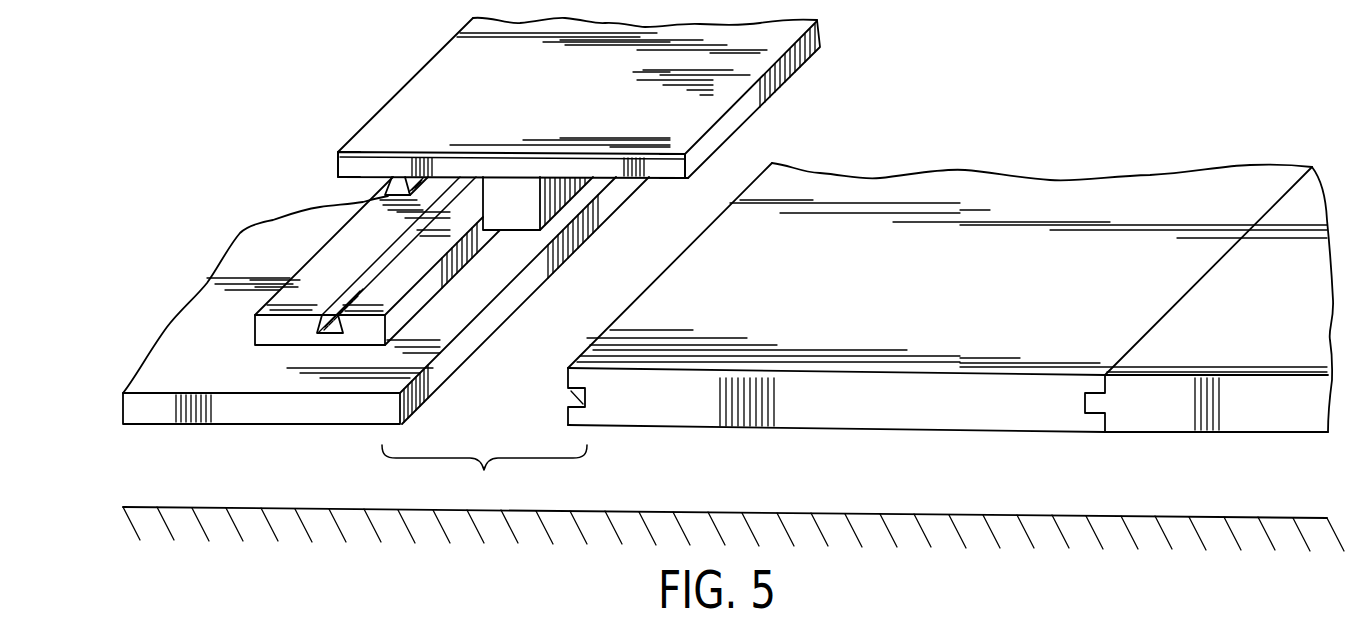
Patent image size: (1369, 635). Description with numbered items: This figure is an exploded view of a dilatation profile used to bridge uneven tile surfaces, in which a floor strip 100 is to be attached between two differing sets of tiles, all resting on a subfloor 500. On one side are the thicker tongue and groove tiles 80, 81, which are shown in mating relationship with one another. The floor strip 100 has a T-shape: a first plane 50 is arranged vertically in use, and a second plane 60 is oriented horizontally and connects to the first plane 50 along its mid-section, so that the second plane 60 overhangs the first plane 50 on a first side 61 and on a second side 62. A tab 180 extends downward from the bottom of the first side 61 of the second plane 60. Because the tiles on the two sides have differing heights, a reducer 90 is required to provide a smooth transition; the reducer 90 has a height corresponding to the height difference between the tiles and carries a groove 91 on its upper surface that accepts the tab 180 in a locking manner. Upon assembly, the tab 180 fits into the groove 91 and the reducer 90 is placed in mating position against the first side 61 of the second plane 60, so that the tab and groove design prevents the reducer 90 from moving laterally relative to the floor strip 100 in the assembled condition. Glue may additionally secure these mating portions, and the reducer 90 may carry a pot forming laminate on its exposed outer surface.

The floor strip 100 is at (212, 103).
The second plane 60 is at (605, 81).
The first side 61 is at (342, 164).
The second side 62 is at (661, 172).
The tab 180 is at (397, 183).
The first plane 50 is at (524, 212).
The tongue and groove tile 80 is at (204, 379).
The tongue and groove tile 81 is at (1300, 286).
The reducer 90 is at (310, 277).
The groove 91 is at (394, 248).
The subfloor 500 is at (883, 512).